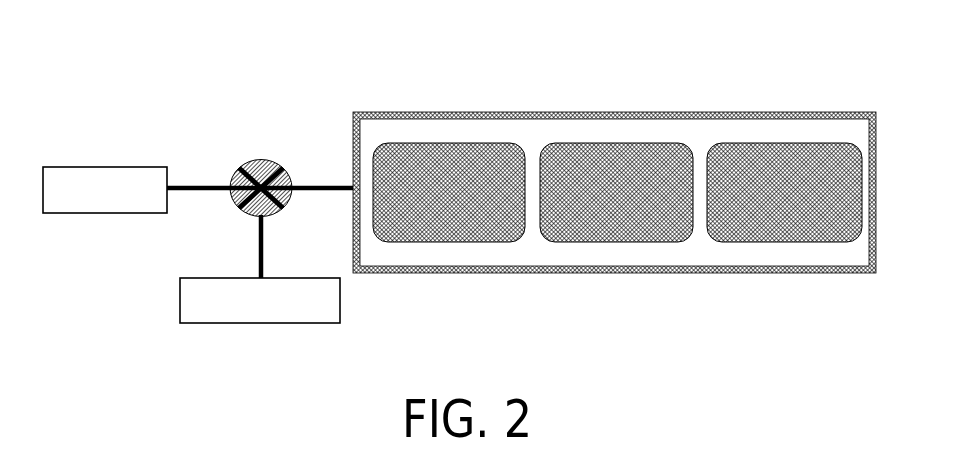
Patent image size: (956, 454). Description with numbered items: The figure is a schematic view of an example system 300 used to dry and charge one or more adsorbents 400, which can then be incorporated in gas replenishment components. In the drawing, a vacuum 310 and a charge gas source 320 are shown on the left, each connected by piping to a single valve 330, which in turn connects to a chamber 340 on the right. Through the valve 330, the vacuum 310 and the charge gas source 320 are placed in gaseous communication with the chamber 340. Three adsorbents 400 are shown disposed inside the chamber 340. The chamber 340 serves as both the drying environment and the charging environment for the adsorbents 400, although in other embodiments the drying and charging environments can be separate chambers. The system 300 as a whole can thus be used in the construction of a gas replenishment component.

The system 300 is at (266, 73).
The vacuum 310 is at (82, 168).
The charge gas source 320 is at (180, 310).
The valve 330 is at (245, 160).
The chamber 340 is at (435, 112).
The adsorbent 400 is at (733, 145).